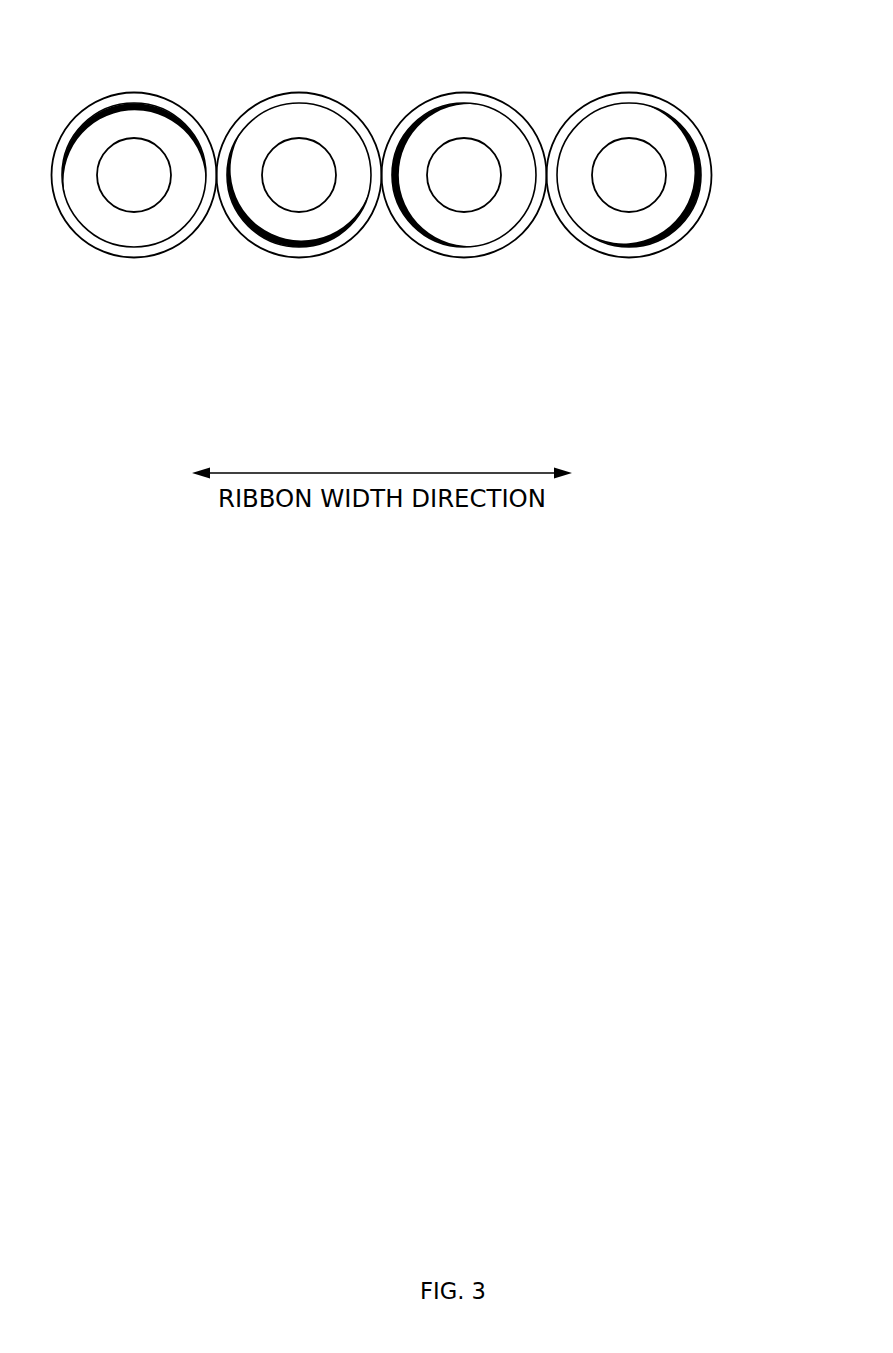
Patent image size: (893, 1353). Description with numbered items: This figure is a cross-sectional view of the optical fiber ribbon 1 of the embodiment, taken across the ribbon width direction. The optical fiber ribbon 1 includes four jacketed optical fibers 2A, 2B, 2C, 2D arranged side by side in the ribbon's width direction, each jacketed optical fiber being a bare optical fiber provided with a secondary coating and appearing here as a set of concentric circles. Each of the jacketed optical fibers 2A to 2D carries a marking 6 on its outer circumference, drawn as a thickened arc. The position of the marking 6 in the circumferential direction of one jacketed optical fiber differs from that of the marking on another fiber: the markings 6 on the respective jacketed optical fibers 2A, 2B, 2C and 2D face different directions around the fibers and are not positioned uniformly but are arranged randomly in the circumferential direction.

The optical fiber ribbon 1 is at (43, 79).
The jacketed optical fiber 2A is at (145, 230).
The jacketed optical fiber 2B is at (298, 230).
The jacketed optical fiber 2C is at (453, 230).
The jacketed optical fiber 2D is at (666, 264).
The marking 6 is at (700, 207).